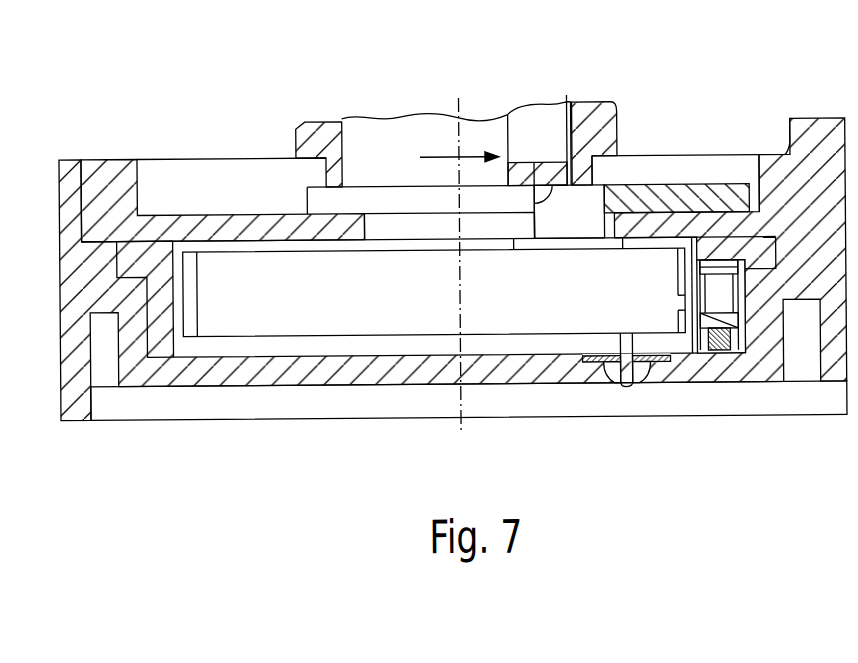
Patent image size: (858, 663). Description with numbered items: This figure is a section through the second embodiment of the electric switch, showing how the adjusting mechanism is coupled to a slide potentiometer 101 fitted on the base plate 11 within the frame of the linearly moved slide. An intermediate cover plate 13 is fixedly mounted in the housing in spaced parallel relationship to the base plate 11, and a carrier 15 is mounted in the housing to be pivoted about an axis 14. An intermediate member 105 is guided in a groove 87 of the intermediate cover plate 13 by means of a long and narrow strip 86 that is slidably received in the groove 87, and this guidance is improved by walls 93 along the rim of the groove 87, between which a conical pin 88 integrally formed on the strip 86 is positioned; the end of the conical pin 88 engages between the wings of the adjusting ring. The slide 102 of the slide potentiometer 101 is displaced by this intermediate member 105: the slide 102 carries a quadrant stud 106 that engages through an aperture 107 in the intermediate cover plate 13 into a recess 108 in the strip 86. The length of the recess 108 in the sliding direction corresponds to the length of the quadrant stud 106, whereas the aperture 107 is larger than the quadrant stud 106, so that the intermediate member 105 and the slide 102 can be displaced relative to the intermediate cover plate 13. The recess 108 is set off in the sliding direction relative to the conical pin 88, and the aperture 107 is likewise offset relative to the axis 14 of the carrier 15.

The base plate 11 is at (278, 371).
The intermediate cover plate 13 is at (787, 148).
The axis 14 is at (457, 108).
The carrier 15 is at (594, 115).
The strip 86 is at (671, 192).
The slot 87 is at (726, 163).
The conical pin 88 is at (521, 127).
The walls 93 is at (369, 135).
The slide potentiometer 101 is at (592, 301).
The slide 102 is at (558, 244).
The intermediate member 105 is at (435, 158).
The quadrant stud 106 is at (590, 205).
The aperture 107 is at (424, 229).
The recess 108 is at (563, 157).